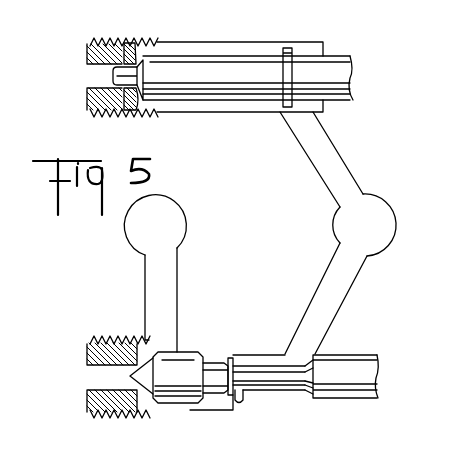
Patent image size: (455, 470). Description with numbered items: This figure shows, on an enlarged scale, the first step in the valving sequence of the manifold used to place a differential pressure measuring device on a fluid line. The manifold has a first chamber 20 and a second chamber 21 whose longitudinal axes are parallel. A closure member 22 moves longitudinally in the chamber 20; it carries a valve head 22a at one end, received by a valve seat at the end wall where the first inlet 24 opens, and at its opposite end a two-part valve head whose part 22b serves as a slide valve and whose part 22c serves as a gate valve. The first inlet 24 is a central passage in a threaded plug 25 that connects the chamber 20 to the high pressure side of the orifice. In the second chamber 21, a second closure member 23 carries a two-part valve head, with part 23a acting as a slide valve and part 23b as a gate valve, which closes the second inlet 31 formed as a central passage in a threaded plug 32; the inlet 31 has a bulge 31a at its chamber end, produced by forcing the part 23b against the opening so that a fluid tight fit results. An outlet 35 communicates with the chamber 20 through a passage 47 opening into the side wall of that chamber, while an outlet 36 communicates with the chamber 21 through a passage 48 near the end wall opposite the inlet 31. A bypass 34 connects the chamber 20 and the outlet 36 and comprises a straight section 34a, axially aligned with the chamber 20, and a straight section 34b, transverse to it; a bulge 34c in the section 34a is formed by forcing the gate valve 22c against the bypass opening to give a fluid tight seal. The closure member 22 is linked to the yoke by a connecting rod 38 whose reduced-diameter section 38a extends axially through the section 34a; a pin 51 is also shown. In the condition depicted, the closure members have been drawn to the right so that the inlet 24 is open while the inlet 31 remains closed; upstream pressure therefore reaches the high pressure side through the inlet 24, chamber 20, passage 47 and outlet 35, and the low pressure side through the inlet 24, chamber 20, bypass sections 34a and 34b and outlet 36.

The first chamber 20 is at (195, 409).
The second chamber 21 is at (215, 47).
The closure member 22 is at (175, 366).
The valve head 22a is at (150, 392).
The slide valve 22b is at (233, 355).
The gate valve 22c is at (215, 366).
The second closure member 23 is at (334, 66).
The slide valve part of valve head 23a is at (127, 52).
The gate valve part of valve head 23b is at (135, 116).
The first inlet 24 is at (89, 368).
The threaded plug 25 is at (98, 398).
The second inlet 31 is at (88, 65).
The bulge 31a is at (124, 118).
The threaded plug 32 is at (90, 101).
The bypass 34 is at (290, 352).
The bypass section 34a is at (265, 394).
The bypass section 34b is at (320, 290).
The bulge 34c is at (242, 403).
The outlet 35 is at (172, 218).
The outlet 36 is at (376, 208).
The connecting rod 38 is at (345, 360).
The reduced diameter section 38a is at (293, 390).
The passage 47 is at (163, 288).
The passage 48 is at (318, 155).
The pin 51 is at (288, 48).